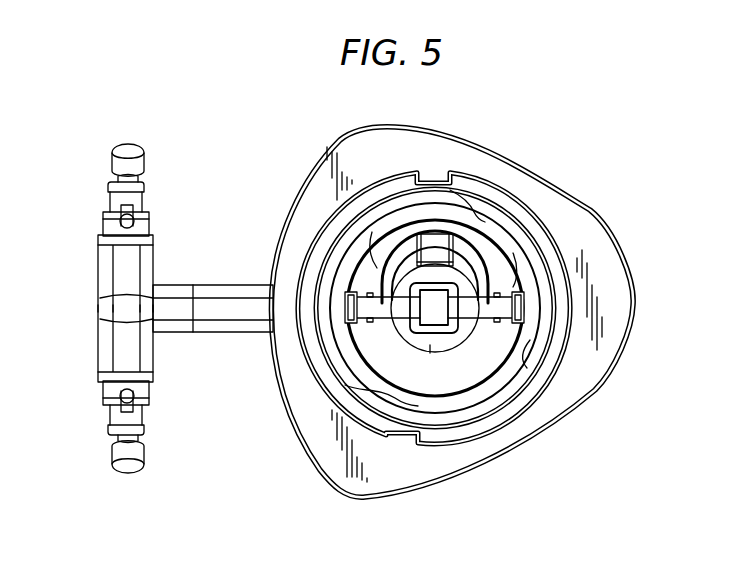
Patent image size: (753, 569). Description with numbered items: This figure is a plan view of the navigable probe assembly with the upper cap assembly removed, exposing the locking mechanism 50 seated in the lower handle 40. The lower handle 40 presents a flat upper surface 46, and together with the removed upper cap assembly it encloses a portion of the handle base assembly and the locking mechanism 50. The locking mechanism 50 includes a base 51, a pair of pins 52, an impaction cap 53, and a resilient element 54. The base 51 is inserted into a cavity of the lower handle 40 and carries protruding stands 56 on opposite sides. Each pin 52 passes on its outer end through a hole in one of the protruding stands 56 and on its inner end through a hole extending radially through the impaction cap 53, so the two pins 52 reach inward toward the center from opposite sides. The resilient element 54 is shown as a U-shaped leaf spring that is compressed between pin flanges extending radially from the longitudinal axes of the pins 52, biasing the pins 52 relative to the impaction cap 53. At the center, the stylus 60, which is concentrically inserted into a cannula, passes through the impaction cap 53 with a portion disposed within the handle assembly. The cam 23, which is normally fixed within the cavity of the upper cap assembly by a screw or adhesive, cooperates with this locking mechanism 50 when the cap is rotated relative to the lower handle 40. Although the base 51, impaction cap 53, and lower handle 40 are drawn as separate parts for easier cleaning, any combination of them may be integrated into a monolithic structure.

The cam 23 is at (547, 325).
The lower handle 40 is at (401, 312).
The flat upper surface 46 is at (618, 321).
The locking mechanism 50 is at (492, 391).
The base 51 is at (375, 264).
The pins 52 is at (361, 334).
The impaction cap 53 is at (432, 343).
The resilient element 54 is at (470, 248).
The protruding stands 56 is at (522, 300).
The stylus 60 is at (438, 304).